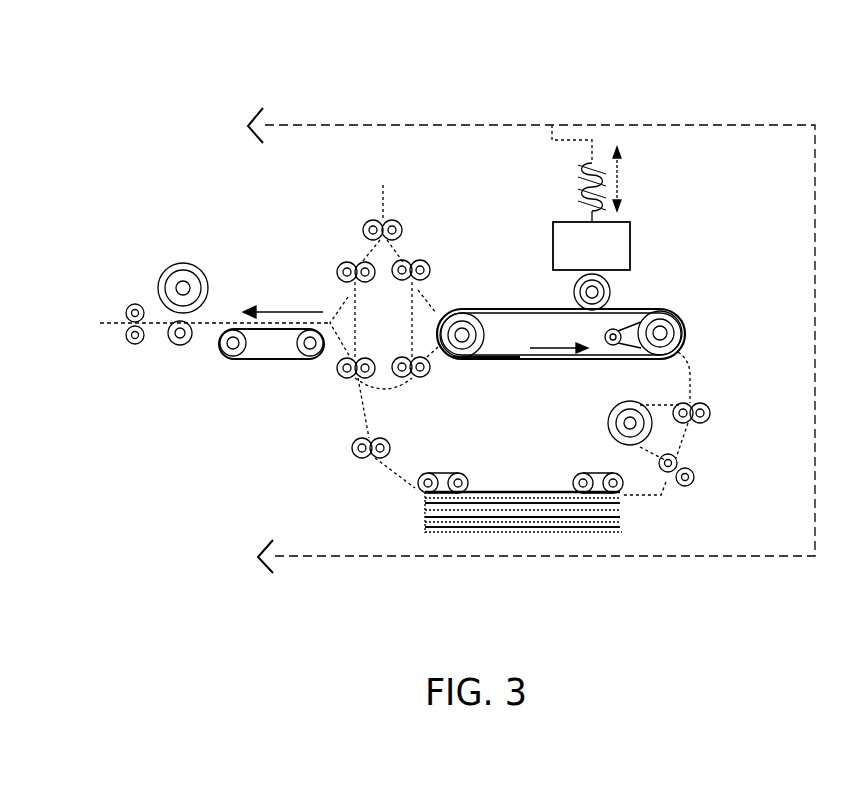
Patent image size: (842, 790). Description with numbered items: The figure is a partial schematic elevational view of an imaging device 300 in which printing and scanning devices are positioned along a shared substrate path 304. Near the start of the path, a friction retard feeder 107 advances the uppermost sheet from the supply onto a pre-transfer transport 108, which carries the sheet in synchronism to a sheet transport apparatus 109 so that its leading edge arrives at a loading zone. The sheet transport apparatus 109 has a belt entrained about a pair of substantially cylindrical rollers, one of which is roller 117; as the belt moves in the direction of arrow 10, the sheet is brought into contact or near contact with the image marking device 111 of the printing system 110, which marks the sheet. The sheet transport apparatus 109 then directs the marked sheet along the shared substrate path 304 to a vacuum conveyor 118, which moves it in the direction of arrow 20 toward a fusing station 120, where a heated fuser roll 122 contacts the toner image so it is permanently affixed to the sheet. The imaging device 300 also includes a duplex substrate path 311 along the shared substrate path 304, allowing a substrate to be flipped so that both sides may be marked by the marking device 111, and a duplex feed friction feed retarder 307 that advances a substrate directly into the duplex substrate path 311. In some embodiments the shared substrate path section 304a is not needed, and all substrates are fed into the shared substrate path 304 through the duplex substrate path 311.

The imaging device 300 is at (505, 64).
The arrow 10 is at (545, 352).
The arrow 20 is at (285, 309).
The friction retard feeder 107 is at (598, 477).
The pre-transfer transport 108 is at (692, 447).
The sheet transport apparatus 109 is at (528, 369).
The printing system 110 is at (591, 197).
The image marking device 111 is at (611, 282).
The roller 117 is at (657, 363).
The vacuum conveyor 118 is at (263, 362).
The fusing station 120 is at (171, 266).
The heated fuser roll 122 is at (184, 260).
The shared substrate path 304 is at (215, 328).
The shared substrate path section 304a is at (700, 367).
The duplex feed friction feed retarder 307 is at (455, 466).
The duplex substrate path 311 is at (363, 254).